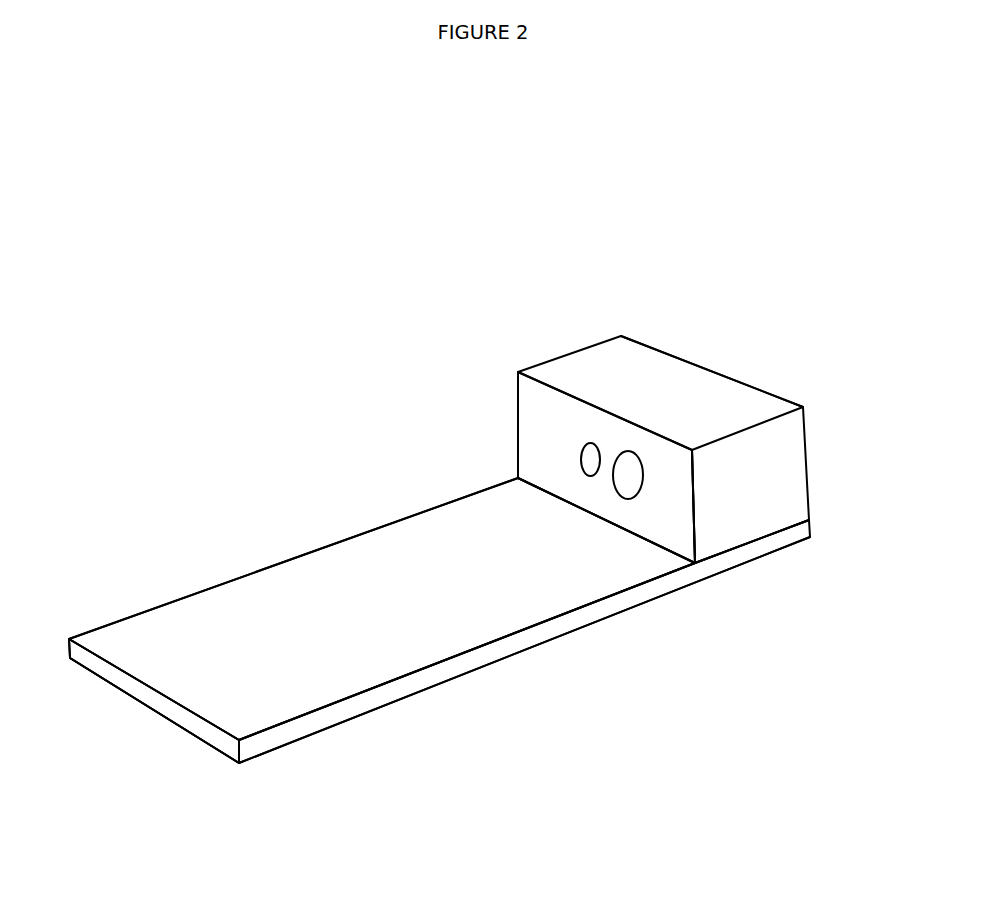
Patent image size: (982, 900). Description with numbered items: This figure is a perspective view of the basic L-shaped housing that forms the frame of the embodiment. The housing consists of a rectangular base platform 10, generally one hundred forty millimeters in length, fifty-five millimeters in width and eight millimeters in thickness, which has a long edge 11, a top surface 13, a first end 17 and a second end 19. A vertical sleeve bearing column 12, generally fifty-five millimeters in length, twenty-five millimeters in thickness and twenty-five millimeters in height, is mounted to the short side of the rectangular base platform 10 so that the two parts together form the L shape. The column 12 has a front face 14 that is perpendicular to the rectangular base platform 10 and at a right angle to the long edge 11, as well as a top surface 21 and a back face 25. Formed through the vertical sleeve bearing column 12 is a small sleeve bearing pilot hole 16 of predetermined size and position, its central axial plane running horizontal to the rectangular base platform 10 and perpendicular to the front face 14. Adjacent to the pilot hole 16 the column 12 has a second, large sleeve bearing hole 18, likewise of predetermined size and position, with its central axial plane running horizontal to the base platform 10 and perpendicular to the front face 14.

The rectangular base platform 10 is at (393, 575).
The long edge 11 is at (555, 628).
The vertical sleeve bearing column 12 is at (670, 377).
The top surface 13 is at (305, 622).
The front face 14 is at (543, 436).
The small sleeve bearing pilot hole 16 is at (589, 442).
The first end 17 is at (678, 563).
The large sleeve bearing hole 18 is at (640, 451).
The second end 19 is at (137, 637).
The top surface 21 is at (692, 393).
The back face 25 is at (419, 685).